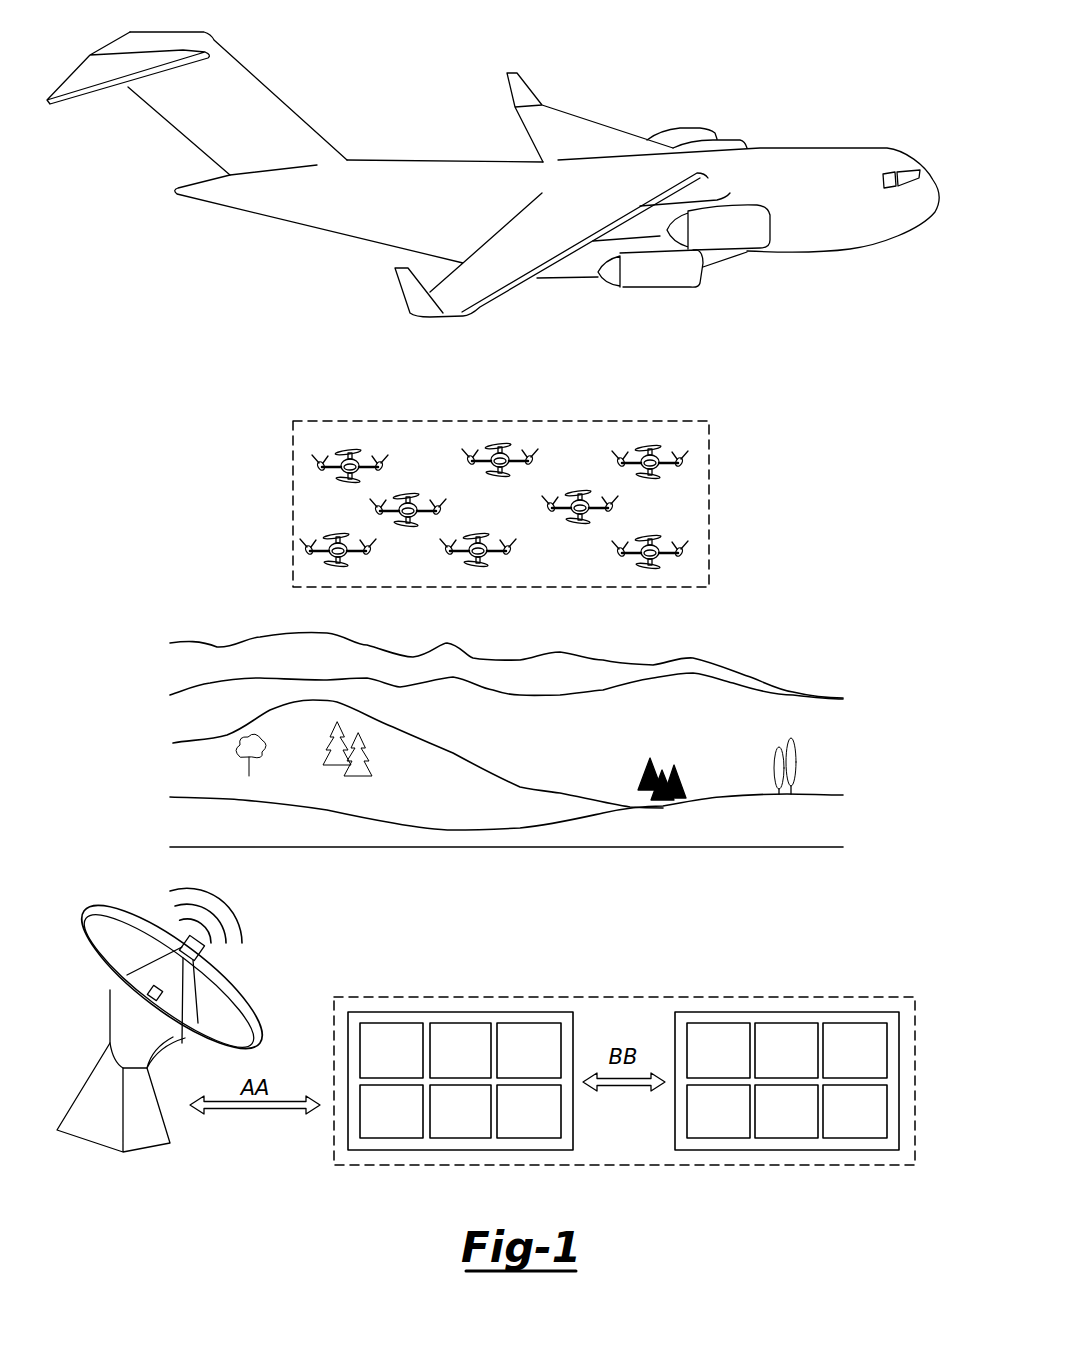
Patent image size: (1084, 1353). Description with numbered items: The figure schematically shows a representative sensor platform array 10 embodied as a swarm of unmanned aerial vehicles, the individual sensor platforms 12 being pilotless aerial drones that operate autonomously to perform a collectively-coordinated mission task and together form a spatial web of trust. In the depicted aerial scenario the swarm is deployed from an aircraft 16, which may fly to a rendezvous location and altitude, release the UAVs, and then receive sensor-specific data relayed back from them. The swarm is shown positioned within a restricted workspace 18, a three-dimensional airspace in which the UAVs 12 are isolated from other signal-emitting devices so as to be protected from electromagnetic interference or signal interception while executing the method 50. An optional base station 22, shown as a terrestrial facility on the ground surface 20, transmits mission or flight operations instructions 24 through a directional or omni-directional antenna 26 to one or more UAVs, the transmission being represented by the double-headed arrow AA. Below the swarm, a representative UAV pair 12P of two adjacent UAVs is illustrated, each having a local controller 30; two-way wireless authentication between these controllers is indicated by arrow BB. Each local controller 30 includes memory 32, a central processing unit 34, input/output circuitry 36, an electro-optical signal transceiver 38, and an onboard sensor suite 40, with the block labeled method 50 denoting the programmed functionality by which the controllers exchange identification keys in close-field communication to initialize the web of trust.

The sensor platform array 10 is at (740, 390).
The sensor platform 12 is at (366, 506).
The UAV pair 12P is at (622, 996).
The aircraft 16 is at (795, 100).
The restricted workspace 18 is at (711, 451).
The ground surface 20 is at (708, 696).
The base station 22 is at (76, 1031).
The mission or flight operations instructions 24 is at (242, 915).
The antenna 26 is at (100, 918).
The local controller 30 is at (573, 1029).
The memory 32 is at (461, 1022).
The central processing unit 34 is at (392, 1022).
The input/output circuitry 36 is at (392, 1139).
The electro-optical signal transceiver 38 is at (528, 1022).
The onboard sensor suite 40 is at (529, 1139).
The method 50 is at (624, 1111).